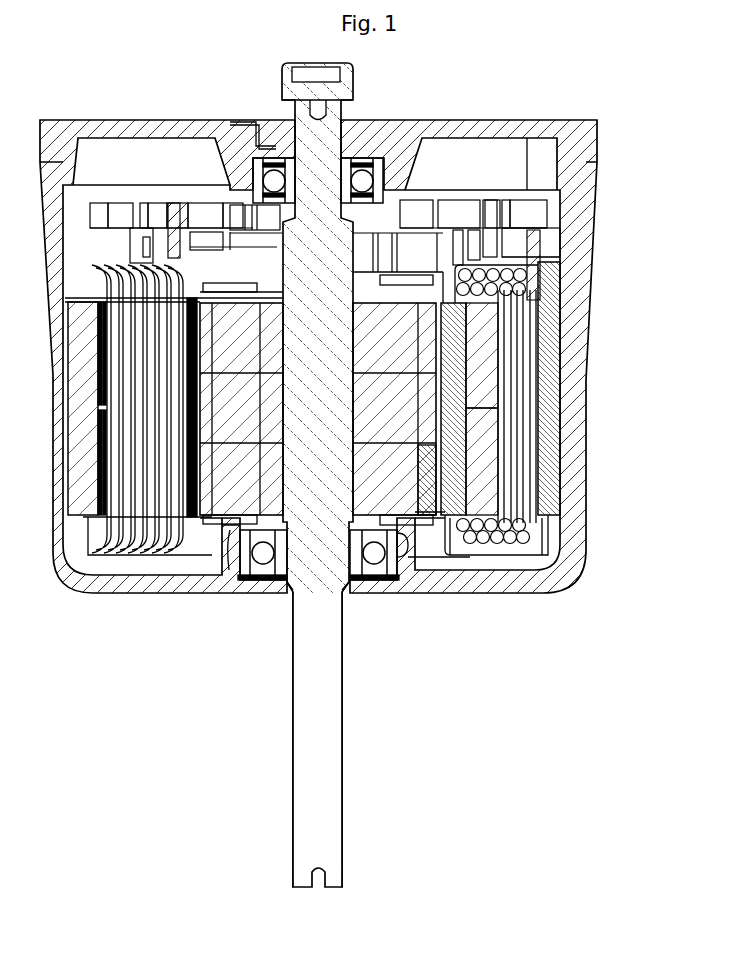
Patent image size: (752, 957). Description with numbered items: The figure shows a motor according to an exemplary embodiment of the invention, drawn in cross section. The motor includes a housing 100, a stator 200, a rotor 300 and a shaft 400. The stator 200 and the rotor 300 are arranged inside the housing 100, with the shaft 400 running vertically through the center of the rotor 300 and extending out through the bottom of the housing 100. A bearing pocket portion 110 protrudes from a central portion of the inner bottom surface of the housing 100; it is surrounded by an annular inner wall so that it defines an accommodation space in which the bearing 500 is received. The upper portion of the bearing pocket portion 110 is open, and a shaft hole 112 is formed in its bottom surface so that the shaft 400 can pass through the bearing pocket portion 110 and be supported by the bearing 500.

The housing 100 is at (593, 334).
The bearing pocket portion 110 is at (402, 557).
The shaft hole 112 is at (278, 590).
The stator 200 is at (491, 368).
The rotor 300 is at (395, 476).
The shaft 400 is at (326, 495).
The bearing 500 is at (353, 584).